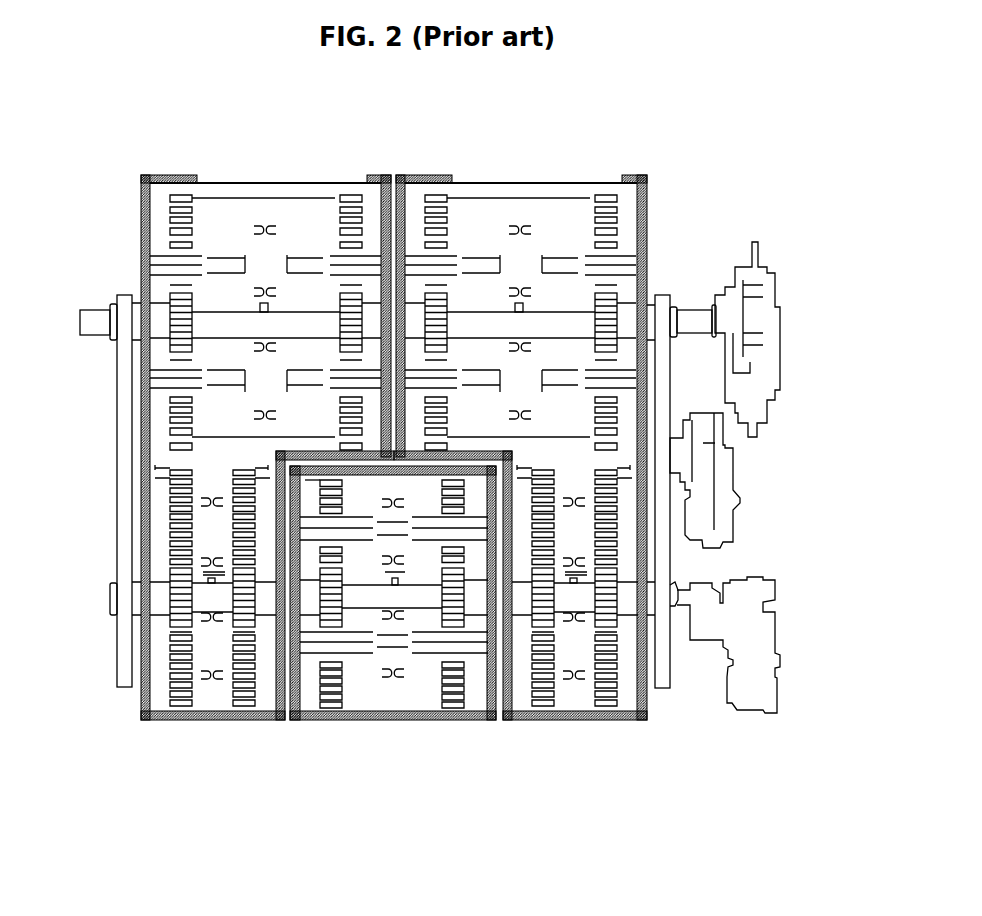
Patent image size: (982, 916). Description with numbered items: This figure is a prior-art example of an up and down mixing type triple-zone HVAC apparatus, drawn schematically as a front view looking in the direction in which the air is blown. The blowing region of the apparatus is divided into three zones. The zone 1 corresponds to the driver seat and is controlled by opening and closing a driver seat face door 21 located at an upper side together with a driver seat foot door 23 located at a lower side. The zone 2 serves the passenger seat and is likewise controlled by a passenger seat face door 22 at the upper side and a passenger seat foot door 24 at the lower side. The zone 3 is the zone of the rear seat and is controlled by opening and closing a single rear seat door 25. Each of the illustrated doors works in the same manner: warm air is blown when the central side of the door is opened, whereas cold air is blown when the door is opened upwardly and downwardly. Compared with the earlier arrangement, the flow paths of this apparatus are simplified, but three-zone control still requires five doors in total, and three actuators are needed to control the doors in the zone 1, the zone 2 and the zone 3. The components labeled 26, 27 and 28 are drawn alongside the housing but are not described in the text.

The zone 1 is at (140, 230).
The zone 2 is at (648, 218).
The zone 3 is at (412, 720).
The driver seat face door 21 is at (223, 222).
The passenger seat face door 22 is at (487, 220).
The driver seat foot door 23 is at (210, 542).
The passenger seat foot door 24 is at (572, 548).
The rear seat door 25 is at (311, 677).
The drive unit 26 is at (765, 357).
The brake unit 27 is at (722, 483).
The output unit 28 is at (757, 645).